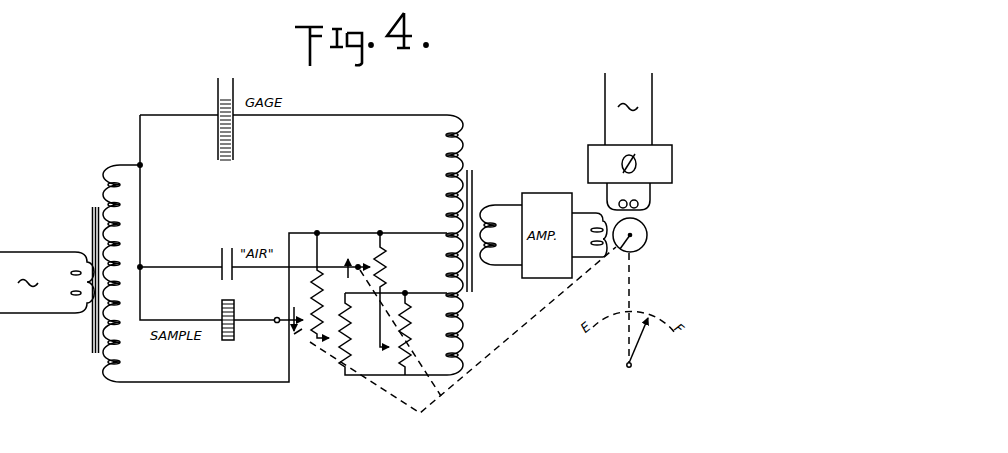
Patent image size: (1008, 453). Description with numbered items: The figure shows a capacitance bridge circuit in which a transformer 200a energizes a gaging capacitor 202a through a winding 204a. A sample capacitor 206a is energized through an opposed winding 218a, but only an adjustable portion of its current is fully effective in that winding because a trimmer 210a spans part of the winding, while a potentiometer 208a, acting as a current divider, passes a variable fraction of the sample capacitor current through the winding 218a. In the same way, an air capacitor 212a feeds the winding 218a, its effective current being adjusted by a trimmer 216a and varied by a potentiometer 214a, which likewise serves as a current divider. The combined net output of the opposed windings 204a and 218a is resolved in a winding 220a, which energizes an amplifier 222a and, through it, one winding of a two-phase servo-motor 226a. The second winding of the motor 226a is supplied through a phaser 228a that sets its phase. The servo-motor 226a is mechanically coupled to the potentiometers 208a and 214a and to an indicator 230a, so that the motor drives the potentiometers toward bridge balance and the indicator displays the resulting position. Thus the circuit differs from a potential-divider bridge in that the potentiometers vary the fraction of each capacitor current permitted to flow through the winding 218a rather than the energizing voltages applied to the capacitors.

The transformer 200a is at (93, 205).
The gaging capacitor 202a is at (222, 77).
The winding 204a is at (452, 245).
The sample capacitor 206a is at (234, 337).
The potentiometer 208a is at (320, 283).
The trimmer 210a is at (340, 352).
The air capacitor 212a is at (221, 253).
The potentiometer 214a is at (387, 263).
The trimmer 216a is at (407, 343).
The winding 218a is at (464, 322).
The winding 220a is at (498, 222).
The amplifier 222a is at (543, 279).
The two-phase servo-motor 226a is at (644, 233).
The phaser 228a is at (673, 156).
The indicator 230a is at (645, 341).